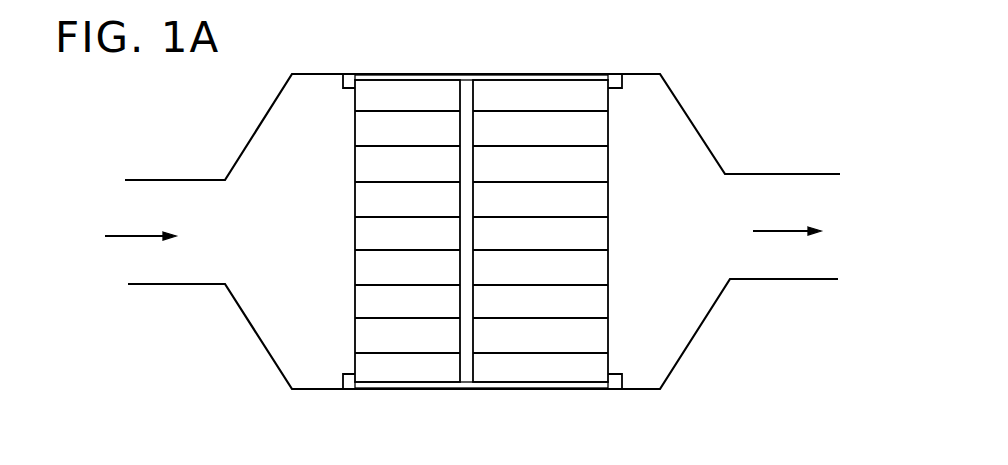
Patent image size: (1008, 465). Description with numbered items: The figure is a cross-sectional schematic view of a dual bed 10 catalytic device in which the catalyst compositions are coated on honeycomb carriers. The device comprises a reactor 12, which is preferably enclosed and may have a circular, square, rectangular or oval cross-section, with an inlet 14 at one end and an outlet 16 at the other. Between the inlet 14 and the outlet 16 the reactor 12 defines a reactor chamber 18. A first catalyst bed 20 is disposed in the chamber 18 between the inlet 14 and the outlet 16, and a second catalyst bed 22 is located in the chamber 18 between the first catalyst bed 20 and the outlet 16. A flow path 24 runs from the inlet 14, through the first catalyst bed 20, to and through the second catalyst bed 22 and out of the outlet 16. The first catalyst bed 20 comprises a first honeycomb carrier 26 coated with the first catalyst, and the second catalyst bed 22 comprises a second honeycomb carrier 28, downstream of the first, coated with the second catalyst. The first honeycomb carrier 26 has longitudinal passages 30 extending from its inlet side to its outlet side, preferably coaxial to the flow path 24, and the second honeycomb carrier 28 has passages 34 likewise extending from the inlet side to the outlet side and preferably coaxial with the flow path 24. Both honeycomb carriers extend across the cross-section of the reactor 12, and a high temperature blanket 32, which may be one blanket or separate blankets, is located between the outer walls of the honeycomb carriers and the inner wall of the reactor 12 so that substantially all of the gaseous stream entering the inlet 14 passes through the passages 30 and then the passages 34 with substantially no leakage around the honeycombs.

The dual bed 10 is at (621, 48).
The reactor 12 is at (337, 72).
The inlet 14 is at (167, 180).
The outlet 16 is at (775, 174).
The reactor chamber 18 is at (322, 173).
The first catalyst bed 20 is at (403, 95).
The second catalyst bed 22 is at (543, 90).
The flow path 24 is at (145, 233).
The first honeycomb carrier 26 is at (413, 355).
The second honeycomb carrier 28 is at (538, 357).
The longitudinal passages 30 is at (382, 340).
The high temperature blanket 32 is at (455, 390).
The second honeycomb carrier passages 34 is at (580, 335).